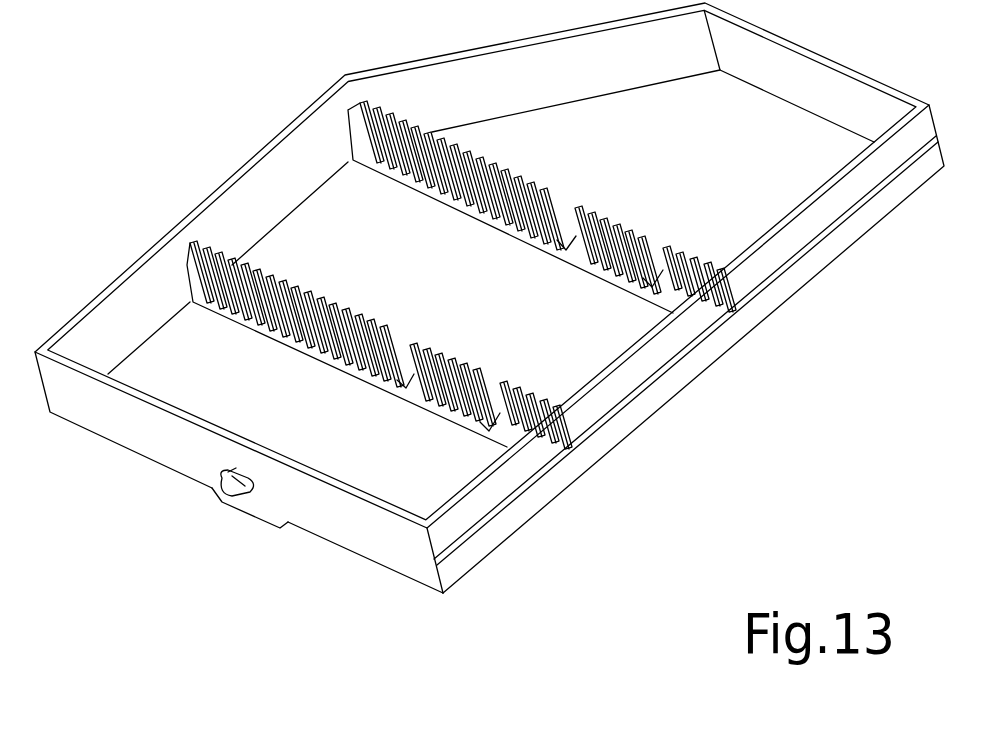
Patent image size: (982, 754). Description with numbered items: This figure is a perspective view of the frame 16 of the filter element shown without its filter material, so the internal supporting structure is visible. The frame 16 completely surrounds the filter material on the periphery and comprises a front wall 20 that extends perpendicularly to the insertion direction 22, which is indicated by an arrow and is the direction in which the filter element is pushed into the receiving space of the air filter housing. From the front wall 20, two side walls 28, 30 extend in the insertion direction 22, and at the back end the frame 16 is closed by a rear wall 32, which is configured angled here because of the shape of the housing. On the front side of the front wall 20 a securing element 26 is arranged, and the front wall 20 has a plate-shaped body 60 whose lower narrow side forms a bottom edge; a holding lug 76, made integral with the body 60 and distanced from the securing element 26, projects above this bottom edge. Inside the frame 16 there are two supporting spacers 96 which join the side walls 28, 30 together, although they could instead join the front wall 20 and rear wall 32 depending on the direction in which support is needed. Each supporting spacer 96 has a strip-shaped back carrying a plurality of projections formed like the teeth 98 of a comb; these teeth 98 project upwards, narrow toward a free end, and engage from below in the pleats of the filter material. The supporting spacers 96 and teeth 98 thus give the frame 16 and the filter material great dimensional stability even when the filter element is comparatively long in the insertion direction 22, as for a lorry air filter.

The frame 16 is at (240, 157).
The front wall 20 is at (133, 422).
The insertion direction 22 is at (847, 277).
The securing element 26 is at (237, 468).
The side wall 28 is at (547, 457).
The side wall 30 is at (290, 213).
The rear wall 32 is at (793, 87).
The plate-shaped body 60 is at (360, 536).
The holding lug 76 is at (243, 510).
The supporting spacer 96 is at (574, 196).
The teeth 98 is at (481, 164).